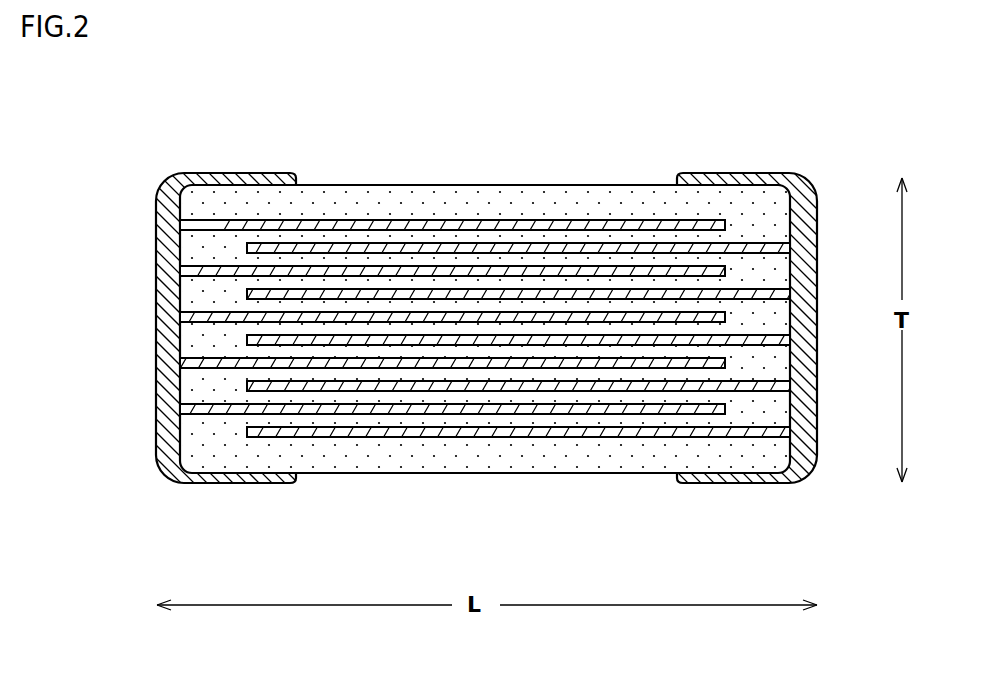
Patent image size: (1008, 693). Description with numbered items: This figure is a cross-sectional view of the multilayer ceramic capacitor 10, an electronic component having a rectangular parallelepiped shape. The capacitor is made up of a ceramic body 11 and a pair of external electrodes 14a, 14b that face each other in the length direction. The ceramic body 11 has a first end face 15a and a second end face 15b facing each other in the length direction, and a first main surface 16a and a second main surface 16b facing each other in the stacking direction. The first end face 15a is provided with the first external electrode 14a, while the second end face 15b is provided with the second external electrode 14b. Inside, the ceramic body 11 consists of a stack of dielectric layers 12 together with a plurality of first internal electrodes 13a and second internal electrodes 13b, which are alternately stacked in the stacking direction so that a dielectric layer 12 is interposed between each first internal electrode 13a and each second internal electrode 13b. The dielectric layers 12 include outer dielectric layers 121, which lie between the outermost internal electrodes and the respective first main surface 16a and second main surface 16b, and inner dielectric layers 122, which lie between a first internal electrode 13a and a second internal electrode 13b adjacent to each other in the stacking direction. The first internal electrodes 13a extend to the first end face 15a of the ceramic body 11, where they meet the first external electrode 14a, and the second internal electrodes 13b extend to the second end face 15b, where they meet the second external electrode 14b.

The multilayer ceramic capacitor 10 is at (708, 137).
The ceramic body 11 is at (648, 185).
The dielectric layers 12 is at (485, 314).
The outer dielectric layers 121 is at (397, 185).
The inner dielectric layers 122 is at (532, 265).
The first internal electrodes 13a is at (603, 267).
The second internal electrodes 13b is at (568, 388).
The first external electrode 14a is at (156, 300).
The second external electrode 14b is at (818, 272).
The first end face 15a is at (180, 243).
The second end face 15b is at (795, 224).
The first main surface 16a is at (332, 184).
The second main surface 16b is at (350, 473).